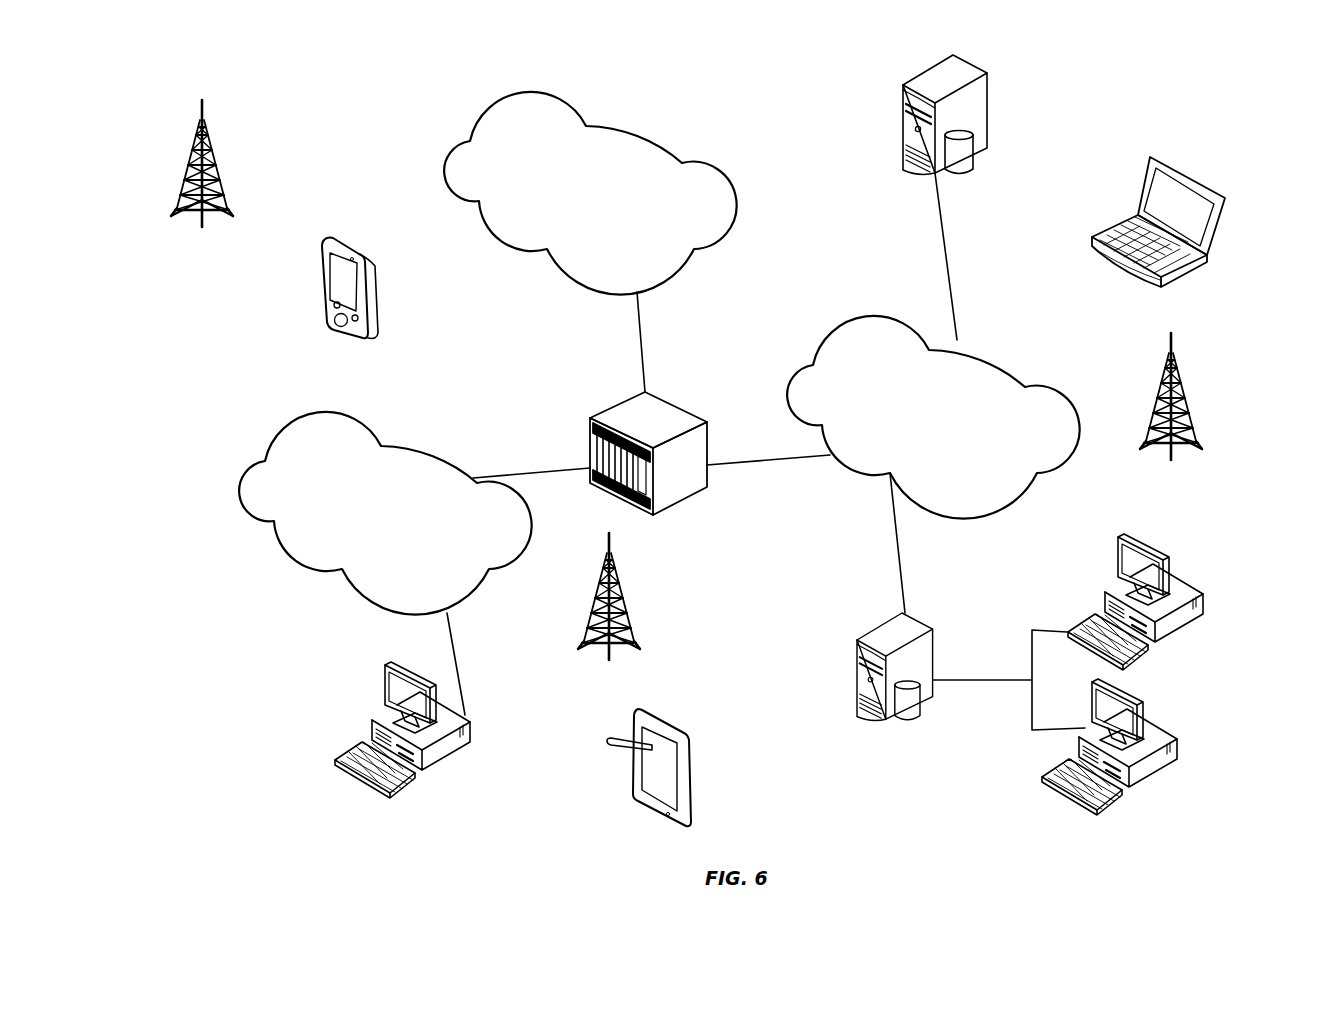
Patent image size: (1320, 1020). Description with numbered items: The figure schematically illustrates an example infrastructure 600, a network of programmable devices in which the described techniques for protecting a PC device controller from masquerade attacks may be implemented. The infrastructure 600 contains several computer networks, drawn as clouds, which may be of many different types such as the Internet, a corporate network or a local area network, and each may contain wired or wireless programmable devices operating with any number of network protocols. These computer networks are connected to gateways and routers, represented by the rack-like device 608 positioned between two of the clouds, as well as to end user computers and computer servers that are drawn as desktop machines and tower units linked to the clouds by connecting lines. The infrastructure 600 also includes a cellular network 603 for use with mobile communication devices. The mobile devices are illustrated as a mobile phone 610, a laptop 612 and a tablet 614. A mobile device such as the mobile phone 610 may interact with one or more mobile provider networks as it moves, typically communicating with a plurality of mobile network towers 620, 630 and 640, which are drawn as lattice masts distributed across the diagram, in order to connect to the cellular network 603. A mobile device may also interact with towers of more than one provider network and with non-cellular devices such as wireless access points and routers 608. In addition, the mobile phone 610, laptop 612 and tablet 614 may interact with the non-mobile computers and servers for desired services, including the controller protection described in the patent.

The infrastructure 600 is at (1072, 150).
The cellular network 603 is at (635, 130).
The gateways and routers 608 is at (670, 403).
The mobile phone 610 is at (355, 242).
The laptop 612 is at (1198, 182).
The tablet 614 is at (672, 725).
The mobile network tower 620 is at (609, 608).
The mobile network tower 630 is at (1171, 410).
The mobile network tower 640 is at (202, 176).